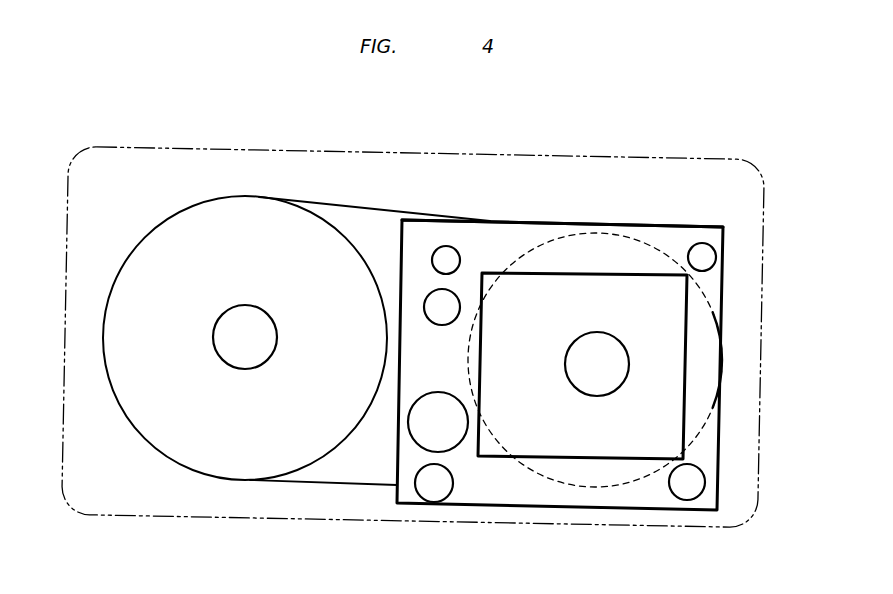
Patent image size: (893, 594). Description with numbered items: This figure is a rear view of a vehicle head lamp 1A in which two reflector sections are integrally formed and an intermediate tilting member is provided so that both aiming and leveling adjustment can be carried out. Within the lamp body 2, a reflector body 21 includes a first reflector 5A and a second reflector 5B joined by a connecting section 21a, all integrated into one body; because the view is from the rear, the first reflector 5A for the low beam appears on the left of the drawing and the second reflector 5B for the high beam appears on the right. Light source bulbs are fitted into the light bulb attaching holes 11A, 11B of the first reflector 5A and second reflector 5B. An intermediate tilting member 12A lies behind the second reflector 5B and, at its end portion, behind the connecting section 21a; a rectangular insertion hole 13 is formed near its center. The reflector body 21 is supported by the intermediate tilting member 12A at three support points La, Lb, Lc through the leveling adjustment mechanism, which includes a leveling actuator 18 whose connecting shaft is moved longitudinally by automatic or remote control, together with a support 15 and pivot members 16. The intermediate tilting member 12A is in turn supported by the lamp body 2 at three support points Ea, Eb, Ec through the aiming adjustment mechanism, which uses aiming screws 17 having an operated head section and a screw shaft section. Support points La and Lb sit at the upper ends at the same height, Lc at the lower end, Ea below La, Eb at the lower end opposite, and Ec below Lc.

The head lamp 1A is at (741, 141).
The lamp body 2 is at (148, 148).
The first reflector 5A is at (237, 212).
The second reflector 5B is at (630, 237).
The light bulb attaching hole 11A is at (240, 358).
The light bulb attaching hole 11B is at (603, 383).
The intermediate tilting member 12A is at (545, 224).
The insertion hole 13 is at (660, 287).
The support 15 is at (468, 499).
The pivot member 16 is at (621, 195).
The aiming screw 17 is at (601, 334).
The leveling actuator 18 is at (440, 404).
The reflector body 21 is at (385, 210).
The connecting section 21a is at (354, 220).
The support point La is at (458, 247).
The support point Lb is at (713, 247).
The support point Lc is at (463, 404).
The support point Ea is at (461, 307).
The support point Eb is at (704, 475).
The support point Ec is at (451, 474).